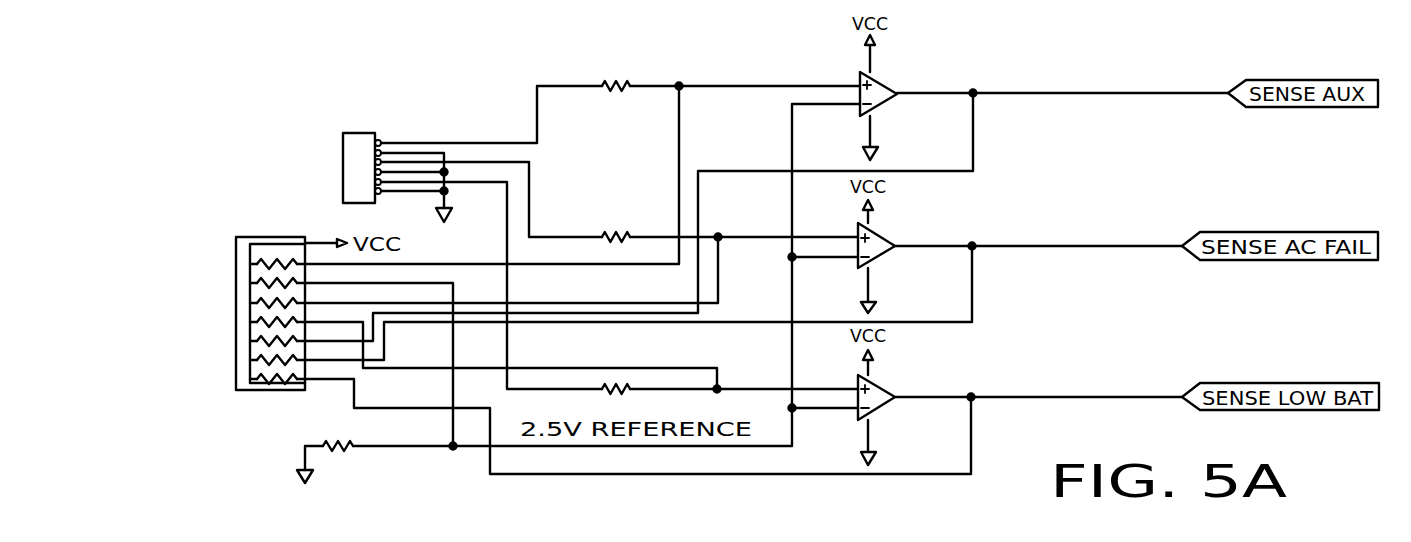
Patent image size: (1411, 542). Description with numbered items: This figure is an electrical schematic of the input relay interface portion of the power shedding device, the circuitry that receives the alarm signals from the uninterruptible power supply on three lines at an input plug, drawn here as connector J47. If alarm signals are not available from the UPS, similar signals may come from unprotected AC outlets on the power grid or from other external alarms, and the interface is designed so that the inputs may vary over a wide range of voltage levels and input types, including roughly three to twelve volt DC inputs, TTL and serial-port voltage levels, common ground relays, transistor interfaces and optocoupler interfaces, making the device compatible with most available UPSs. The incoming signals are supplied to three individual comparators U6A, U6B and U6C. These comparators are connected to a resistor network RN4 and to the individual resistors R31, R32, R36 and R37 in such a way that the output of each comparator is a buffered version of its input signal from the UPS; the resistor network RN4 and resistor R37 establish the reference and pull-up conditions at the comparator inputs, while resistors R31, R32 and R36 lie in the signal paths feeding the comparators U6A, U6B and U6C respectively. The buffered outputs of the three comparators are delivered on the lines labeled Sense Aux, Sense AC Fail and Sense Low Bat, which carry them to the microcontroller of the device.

The connector J47 is at (362, 133).
The resistor network RN4 is at (268, 237).
The resistor R31 is at (617, 82).
The resistor R32 is at (618, 232).
The resistor R36 is at (617, 385).
The resistor R37 is at (340, 442).
The comparator U6A is at (880, 80).
The comparator U6B is at (883, 235).
The comparator U6C is at (883, 385).